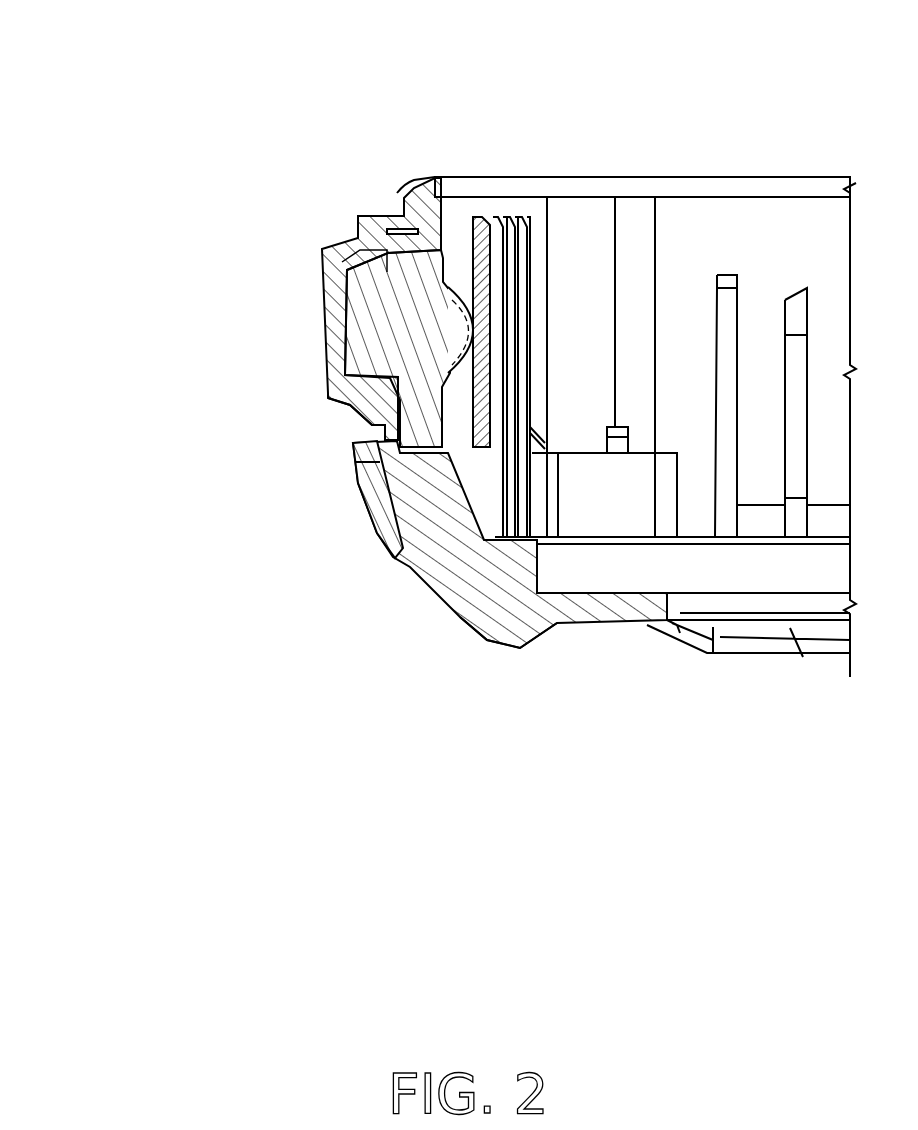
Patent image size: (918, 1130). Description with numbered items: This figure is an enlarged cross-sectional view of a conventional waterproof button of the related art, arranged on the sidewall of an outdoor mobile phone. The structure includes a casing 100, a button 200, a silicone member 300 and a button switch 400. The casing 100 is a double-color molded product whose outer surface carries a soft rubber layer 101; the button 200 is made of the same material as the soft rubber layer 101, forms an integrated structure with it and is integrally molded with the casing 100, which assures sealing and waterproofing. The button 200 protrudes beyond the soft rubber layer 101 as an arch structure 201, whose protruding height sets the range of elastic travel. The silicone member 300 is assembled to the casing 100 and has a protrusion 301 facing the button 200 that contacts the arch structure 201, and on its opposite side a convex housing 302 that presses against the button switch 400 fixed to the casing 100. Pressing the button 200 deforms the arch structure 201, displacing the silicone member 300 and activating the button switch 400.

The casing 100 is at (453, 542).
The soft rubber layer 101 is at (487, 617).
The button 200 is at (333, 303).
The arch structure 201 is at (353, 402).
The silicone member 300 is at (433, 267).
The protrusion 301 is at (357, 320).
The convex housing 302 is at (450, 327).
The button switch 400 is at (477, 335).